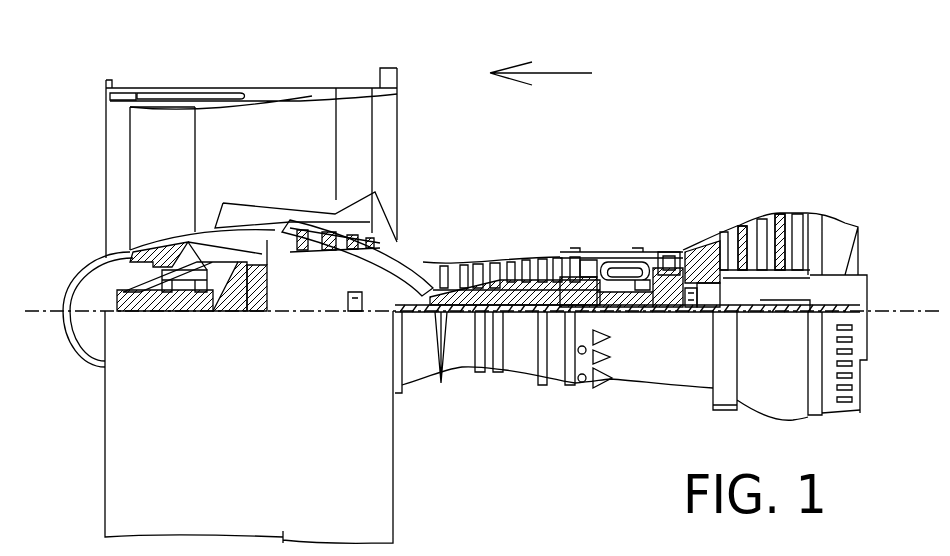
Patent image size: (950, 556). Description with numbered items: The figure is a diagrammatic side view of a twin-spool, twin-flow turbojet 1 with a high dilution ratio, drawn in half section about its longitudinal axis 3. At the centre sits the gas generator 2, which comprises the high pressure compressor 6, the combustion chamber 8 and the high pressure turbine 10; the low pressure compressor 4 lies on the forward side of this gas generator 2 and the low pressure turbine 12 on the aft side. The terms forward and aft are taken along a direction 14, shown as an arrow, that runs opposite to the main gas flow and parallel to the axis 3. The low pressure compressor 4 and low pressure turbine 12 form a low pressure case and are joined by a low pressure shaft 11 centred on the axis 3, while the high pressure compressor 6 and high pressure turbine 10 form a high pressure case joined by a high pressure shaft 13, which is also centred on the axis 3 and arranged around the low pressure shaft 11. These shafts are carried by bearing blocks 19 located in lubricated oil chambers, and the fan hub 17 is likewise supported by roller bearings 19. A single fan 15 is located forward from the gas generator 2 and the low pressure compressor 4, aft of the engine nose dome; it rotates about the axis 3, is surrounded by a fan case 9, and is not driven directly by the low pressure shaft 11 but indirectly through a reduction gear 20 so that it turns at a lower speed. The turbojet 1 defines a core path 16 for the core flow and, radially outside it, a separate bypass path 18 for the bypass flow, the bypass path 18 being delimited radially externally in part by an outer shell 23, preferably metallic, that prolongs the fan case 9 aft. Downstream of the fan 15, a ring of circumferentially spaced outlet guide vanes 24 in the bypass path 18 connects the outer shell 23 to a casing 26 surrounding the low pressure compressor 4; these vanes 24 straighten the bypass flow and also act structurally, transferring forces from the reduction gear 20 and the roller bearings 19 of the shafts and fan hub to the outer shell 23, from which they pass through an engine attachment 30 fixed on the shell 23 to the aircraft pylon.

The turbojet 1 is at (571, 186).
The gas generator 2 is at (503, 393).
The longitudinal axis 3 is at (40, 322).
The low pressure compressor 4 is at (356, 233).
The high pressure compressor 6 is at (519, 258).
The combustion chamber 8 is at (609, 262).
The fan case 9 is at (212, 88).
The high pressure turbine 10 is at (667, 258).
The low pressure shaft 11 is at (415, 315).
The low pressure turbine 12 is at (768, 230).
The high pressure shaft 13 is at (652, 314).
The direction 14 is at (568, 72).
The fan 15 is at (148, 88).
The core path 16 is at (423, 267).
The fan hub 17 is at (165, 292).
The bypass path 18 is at (258, 147).
The bearing blocks 19 is at (200, 292).
The reduction gear 20 is at (253, 300).
The outer shell 23 is at (318, 88).
The outlet guide vanes 24 is at (353, 143).
The casing 26 is at (310, 232).
The engine attachment 30 is at (399, 73).